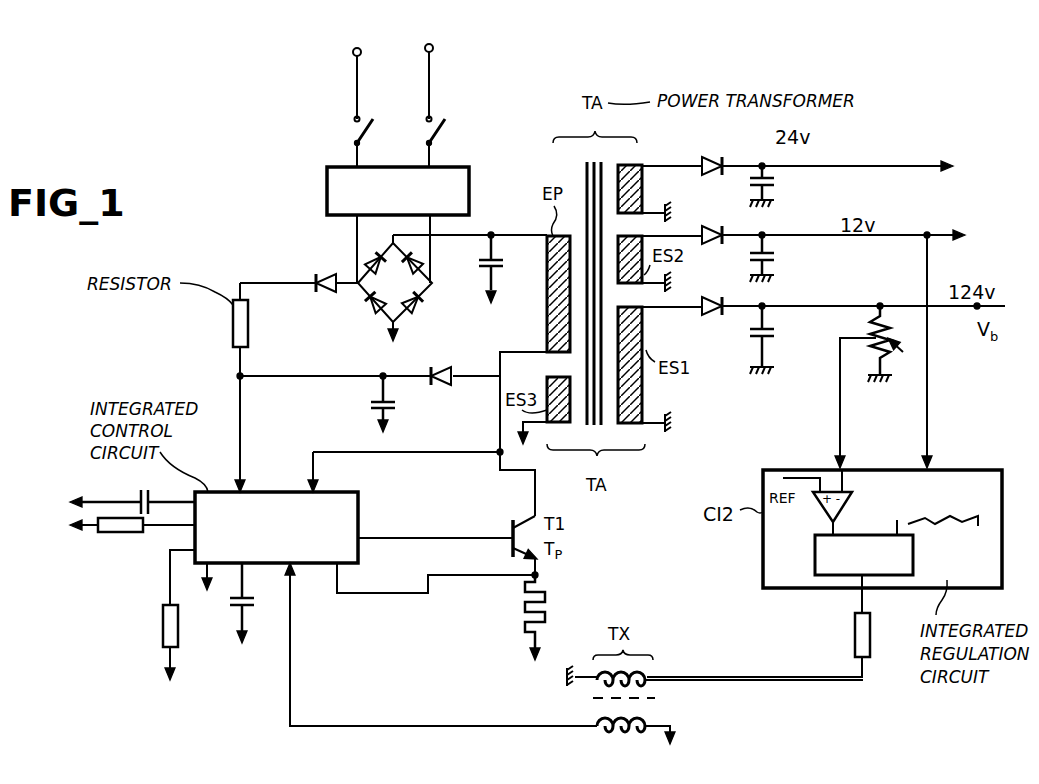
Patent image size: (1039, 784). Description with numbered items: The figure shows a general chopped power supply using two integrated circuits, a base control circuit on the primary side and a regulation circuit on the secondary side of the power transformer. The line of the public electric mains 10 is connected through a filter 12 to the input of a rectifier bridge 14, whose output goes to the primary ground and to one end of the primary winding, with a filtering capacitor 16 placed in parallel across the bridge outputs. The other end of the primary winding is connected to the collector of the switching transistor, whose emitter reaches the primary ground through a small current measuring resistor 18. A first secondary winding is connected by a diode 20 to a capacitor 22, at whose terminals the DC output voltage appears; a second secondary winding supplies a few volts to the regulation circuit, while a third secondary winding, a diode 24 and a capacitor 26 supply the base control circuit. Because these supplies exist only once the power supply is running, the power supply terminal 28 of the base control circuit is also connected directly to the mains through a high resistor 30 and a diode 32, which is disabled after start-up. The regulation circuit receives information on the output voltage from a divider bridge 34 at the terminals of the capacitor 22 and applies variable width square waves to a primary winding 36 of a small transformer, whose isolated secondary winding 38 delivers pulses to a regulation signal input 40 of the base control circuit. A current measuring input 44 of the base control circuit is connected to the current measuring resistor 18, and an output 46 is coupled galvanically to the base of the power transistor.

The line of the public electric mains 10 is at (425, 47).
The filter 12 is at (327, 185).
The rectifier bridge 14 is at (345, 252).
The filtering capacitor 16 is at (503, 266).
The current measuring resistor 18 is at (545, 603).
The diode 20 is at (710, 295).
The capacitor 22 is at (752, 340).
The diode 24 is at (455, 372).
The capacitor 26 is at (372, 403).
The power supply terminal 28 is at (246, 490).
The high resistor 30 is at (233, 338).
The diode 32 is at (325, 292).
The divider bridge 34 is at (879, 385).
The primary winding 36 is at (647, 676).
The secondary winding 38 is at (597, 732).
The regulation signal input 40 is at (292, 576).
The current measuring input 44 is at (345, 578).
The output 46 is at (358, 538).